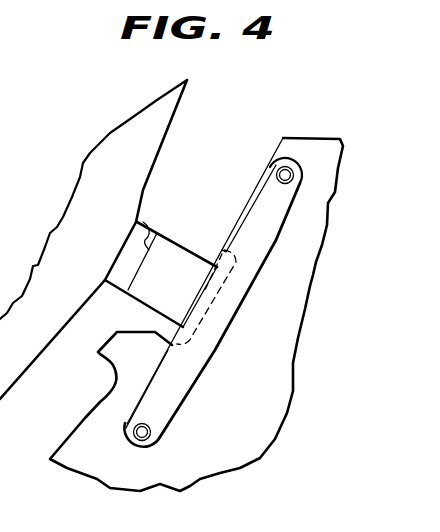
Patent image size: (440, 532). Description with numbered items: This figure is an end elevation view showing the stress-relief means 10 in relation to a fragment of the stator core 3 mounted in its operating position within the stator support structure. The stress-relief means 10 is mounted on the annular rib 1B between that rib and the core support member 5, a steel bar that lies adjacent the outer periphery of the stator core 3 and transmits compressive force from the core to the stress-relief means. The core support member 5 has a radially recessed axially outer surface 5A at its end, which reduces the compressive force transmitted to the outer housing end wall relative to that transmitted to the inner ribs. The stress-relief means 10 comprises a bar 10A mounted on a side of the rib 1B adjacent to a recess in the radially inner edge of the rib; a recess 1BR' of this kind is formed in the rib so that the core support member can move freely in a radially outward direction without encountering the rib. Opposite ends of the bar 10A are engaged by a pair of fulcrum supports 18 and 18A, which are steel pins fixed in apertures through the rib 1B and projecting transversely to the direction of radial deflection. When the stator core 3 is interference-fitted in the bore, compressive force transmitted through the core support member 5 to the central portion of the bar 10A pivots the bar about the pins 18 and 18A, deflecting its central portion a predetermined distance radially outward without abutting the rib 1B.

The stator core 3 is at (95, 246).
The core support member 5 is at (177, 290).
The radially recessed axially outer surface 5A is at (137, 222).
The annular rib 1B is at (238, 431).
The recess 1BR' is at (226, 254).
The stress-relief means 10 is at (240, 292).
The bar 10A is at (178, 399).
The fulcrum support 18 is at (293, 175).
The fulcrum support 18A is at (144, 436).